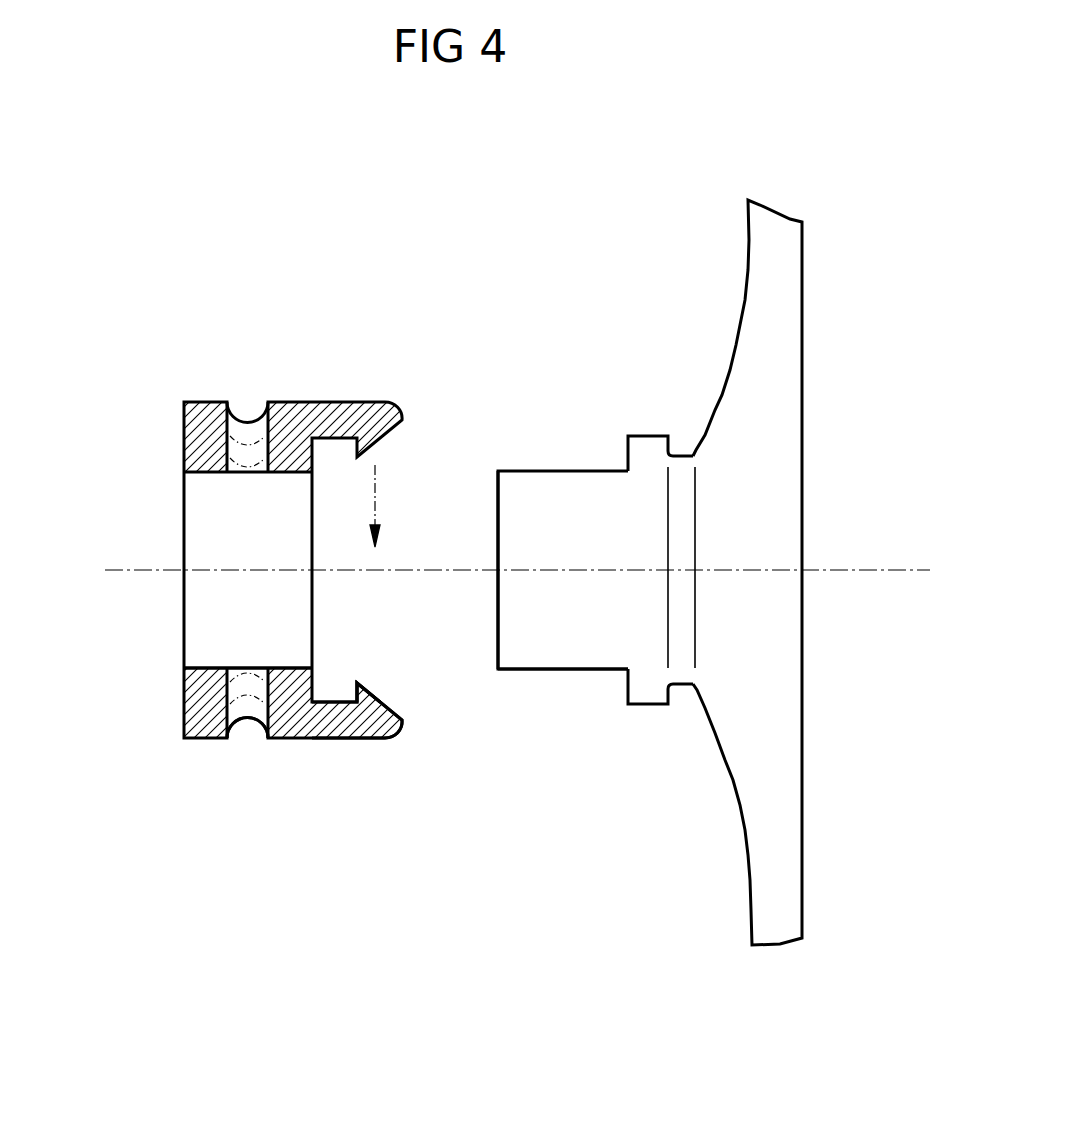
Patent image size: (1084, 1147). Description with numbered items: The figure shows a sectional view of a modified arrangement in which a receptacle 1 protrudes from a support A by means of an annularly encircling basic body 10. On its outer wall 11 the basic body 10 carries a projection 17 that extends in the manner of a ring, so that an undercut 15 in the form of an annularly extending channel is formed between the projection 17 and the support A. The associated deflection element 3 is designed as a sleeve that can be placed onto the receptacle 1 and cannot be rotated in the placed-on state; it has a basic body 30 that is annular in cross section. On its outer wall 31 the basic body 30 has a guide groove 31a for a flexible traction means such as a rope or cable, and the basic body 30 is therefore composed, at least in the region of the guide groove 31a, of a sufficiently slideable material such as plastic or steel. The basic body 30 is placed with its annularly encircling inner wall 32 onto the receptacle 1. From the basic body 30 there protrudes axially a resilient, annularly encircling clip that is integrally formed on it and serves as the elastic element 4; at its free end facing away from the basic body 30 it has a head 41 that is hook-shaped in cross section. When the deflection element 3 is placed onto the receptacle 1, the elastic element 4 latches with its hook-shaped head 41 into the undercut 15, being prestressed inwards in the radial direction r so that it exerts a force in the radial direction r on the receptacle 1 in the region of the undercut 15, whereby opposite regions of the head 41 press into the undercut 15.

The support A is at (780, 278).
The receptacle 1 is at (584, 587).
The basic body 10 is at (497, 670).
The outer wall 11 is at (573, 670).
The undercut 15 is at (688, 684).
The projection 17 is at (643, 687).
The deflection element 3 is at (381, 583).
The basic body 30 is at (180, 432).
The outer wall 31 is at (197, 740).
The guide groove 31a is at (247, 722).
The inner wall 32 is at (205, 663).
The elastic element 4 is at (333, 723).
The head 41 is at (358, 700).
The radial direction r is at (382, 506).